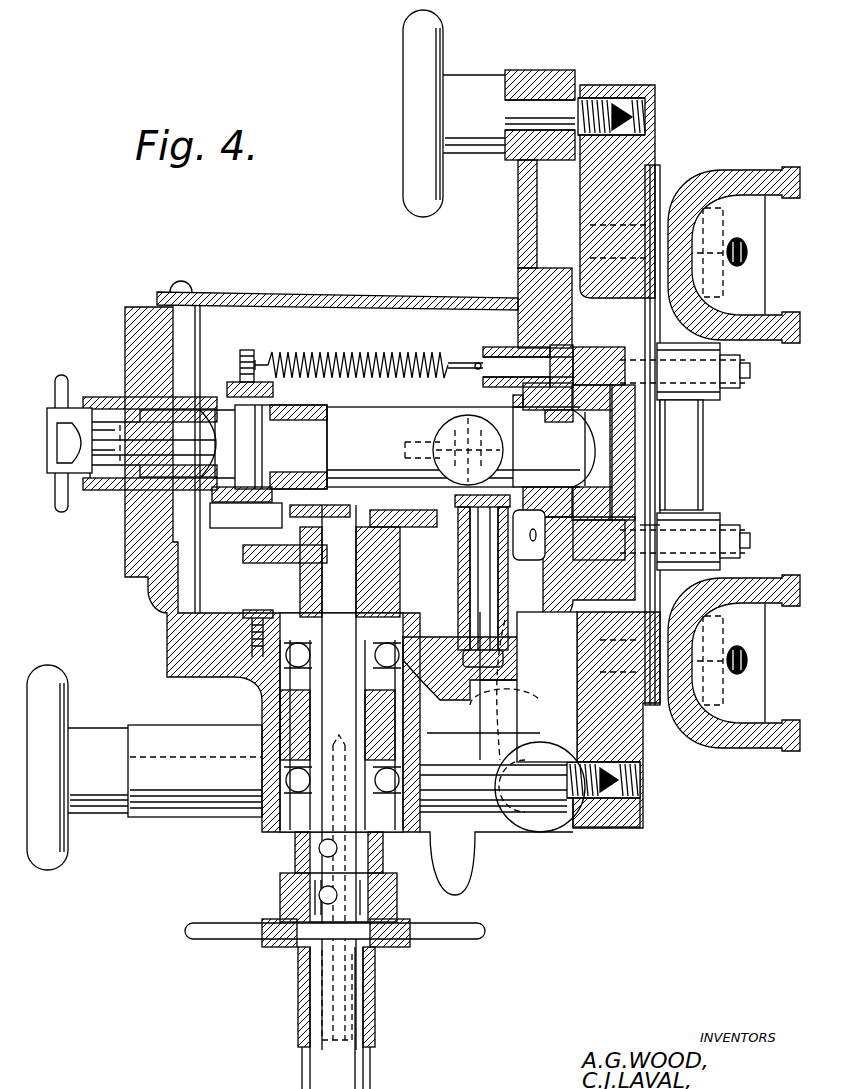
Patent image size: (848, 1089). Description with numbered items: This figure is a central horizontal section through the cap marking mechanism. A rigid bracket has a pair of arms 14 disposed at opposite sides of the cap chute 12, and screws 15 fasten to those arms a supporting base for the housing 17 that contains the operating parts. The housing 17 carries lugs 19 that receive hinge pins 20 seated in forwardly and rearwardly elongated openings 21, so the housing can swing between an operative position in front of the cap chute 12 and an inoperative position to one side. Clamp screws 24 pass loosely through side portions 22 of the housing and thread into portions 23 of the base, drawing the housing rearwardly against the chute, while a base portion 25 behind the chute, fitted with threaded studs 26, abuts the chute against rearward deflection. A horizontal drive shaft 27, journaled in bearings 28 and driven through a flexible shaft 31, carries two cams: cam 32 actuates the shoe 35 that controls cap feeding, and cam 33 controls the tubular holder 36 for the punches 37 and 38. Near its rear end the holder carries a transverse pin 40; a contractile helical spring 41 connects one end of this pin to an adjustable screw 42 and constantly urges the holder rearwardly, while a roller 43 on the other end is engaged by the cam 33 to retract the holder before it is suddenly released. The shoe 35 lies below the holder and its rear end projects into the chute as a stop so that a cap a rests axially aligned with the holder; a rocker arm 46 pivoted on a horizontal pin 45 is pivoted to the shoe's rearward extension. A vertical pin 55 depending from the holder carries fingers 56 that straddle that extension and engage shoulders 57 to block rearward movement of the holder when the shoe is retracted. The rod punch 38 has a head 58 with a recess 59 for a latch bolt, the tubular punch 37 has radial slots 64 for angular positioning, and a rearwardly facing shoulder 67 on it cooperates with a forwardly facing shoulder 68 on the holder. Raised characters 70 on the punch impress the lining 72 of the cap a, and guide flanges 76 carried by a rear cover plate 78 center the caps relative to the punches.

The cap chute 12 is at (640, 447).
The arms 14 is at (750, 172).
The screws 15 is at (748, 252).
The housing 17 is at (160, 600).
The lugs 19 is at (540, 808).
The hinge pins 20 is at (488, 818).
The openings 21 is at (514, 740).
The side portions 22 is at (512, 148).
The portions 23 is at (640, 158).
The clamp screws 24 is at (540, 108).
The portion 25 is at (700, 480).
The studs 26 is at (745, 372).
The drive shaft 27 is at (345, 702).
The bearings 28 is at (395, 640).
The flexible shaft 31 is at (375, 1068).
The cam 32 is at (255, 560).
The cam 33 is at (415, 524).
The shoe 35 is at (518, 410).
The tubular holder 36 is at (453, 447).
The punch 37 is at (298, 414).
The punch 38 is at (110, 472).
The transverse pin 40 is at (281, 447).
The contractile helical spring 41 is at (368, 342).
The screw 42 is at (518, 350).
The roller 43 is at (236, 516).
The horizontal pin 45 is at (470, 578).
The rocker arm 46 is at (517, 558).
The vertical pin 55 is at (503, 458).
The fingers 56 is at (438, 444).
The shoulders 57 is at (445, 372).
The head 58 is at (55, 410).
The recess 59 is at (65, 445).
The radial slots 64 is at (103, 400).
The shoulder 67 is at (154, 443).
The shoulder 68 is at (252, 440).
The raised characters 70 is at (600, 465).
The lining 72 is at (612, 420).
The guide flanges 76 is at (600, 355).
The rear cover plate 78 is at (562, 418).
The cap a is at (642, 528).